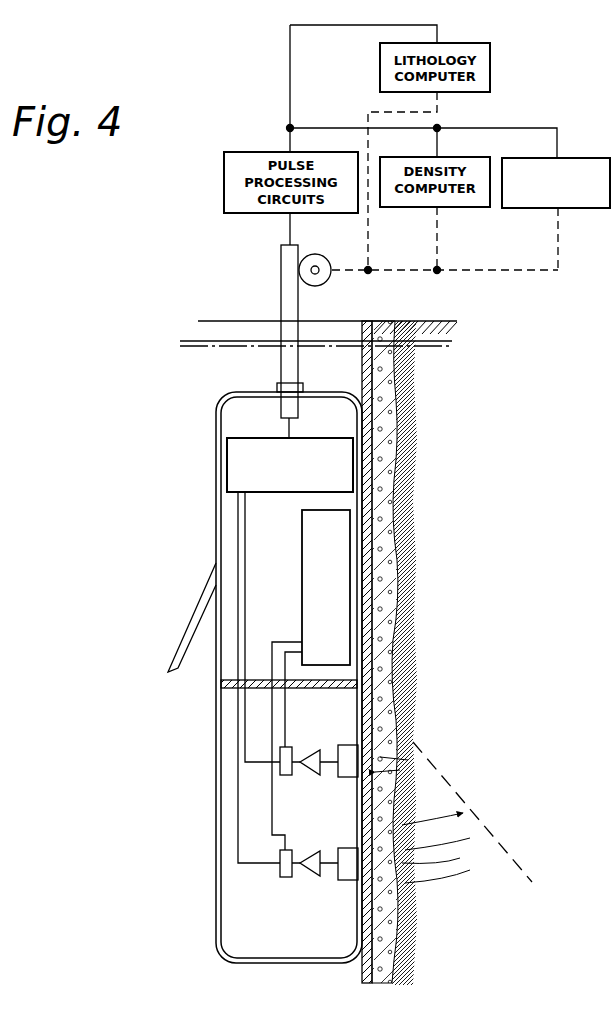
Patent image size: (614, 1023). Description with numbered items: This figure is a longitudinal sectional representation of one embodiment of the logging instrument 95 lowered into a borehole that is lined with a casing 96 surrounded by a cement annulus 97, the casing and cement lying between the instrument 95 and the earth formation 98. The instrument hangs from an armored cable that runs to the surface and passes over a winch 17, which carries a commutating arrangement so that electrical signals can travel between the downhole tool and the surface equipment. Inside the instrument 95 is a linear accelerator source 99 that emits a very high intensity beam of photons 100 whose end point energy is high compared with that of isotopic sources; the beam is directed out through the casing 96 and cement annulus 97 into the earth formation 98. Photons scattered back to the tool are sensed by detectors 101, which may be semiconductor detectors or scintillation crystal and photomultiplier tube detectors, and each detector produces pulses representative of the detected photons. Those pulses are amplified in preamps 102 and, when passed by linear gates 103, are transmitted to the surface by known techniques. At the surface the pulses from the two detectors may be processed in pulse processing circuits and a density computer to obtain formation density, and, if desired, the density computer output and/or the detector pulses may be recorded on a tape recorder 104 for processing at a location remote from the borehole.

The winch 17 is at (323, 284).
The logging instrument 95 is at (216, 410).
The casing 96 is at (362, 370).
The cement annulus 97 is at (405, 412).
The earth formation 98 is at (405, 504).
The linear accelerator source 99 is at (305, 581).
The beam of photons 100 is at (453, 781).
The detectors 101 is at (338, 802).
The preamps 102 is at (307, 853).
The linear gates 103 is at (278, 853).
The tape recorder 104 is at (590, 208).